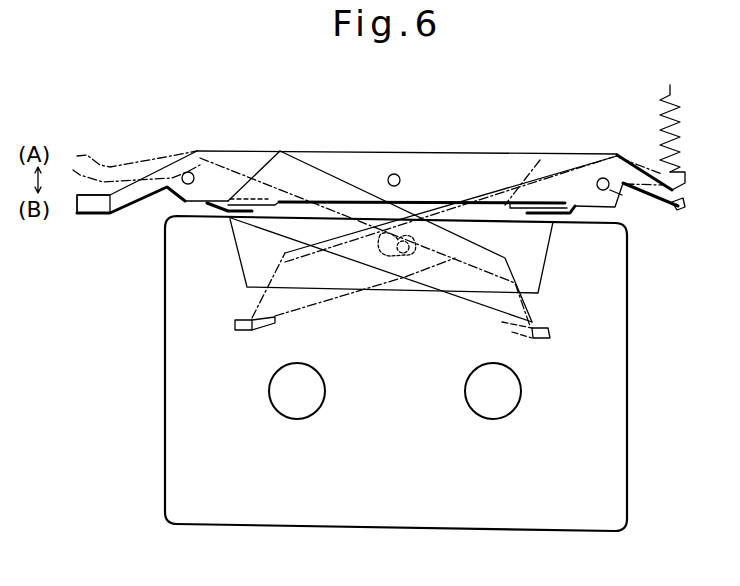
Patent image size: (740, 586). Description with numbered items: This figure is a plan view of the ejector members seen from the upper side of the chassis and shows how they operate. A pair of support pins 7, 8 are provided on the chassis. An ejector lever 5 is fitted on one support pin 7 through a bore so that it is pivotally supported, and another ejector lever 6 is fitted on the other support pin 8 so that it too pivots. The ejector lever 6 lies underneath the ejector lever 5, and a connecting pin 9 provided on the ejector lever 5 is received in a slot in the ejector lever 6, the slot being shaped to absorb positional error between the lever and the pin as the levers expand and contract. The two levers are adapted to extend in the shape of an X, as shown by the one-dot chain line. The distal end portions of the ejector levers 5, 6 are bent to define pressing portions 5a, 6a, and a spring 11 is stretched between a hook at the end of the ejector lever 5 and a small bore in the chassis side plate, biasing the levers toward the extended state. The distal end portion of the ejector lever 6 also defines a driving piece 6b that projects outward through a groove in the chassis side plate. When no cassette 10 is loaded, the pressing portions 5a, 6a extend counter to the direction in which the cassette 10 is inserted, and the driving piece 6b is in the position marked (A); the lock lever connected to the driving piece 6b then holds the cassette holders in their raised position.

The ejector lever 5 is at (538, 162).
The pressing portion 5a is at (228, 214).
The ejector lever 6 is at (243, 155).
The pressing portion 6a is at (570, 223).
The driving piece 6b is at (93, 208).
The support pin 7 is at (626, 199).
The support pin 8 is at (183, 187).
The connecting pin 9 is at (393, 173).
The cassette 10 is at (612, 490).
The spring 11 is at (681, 129).